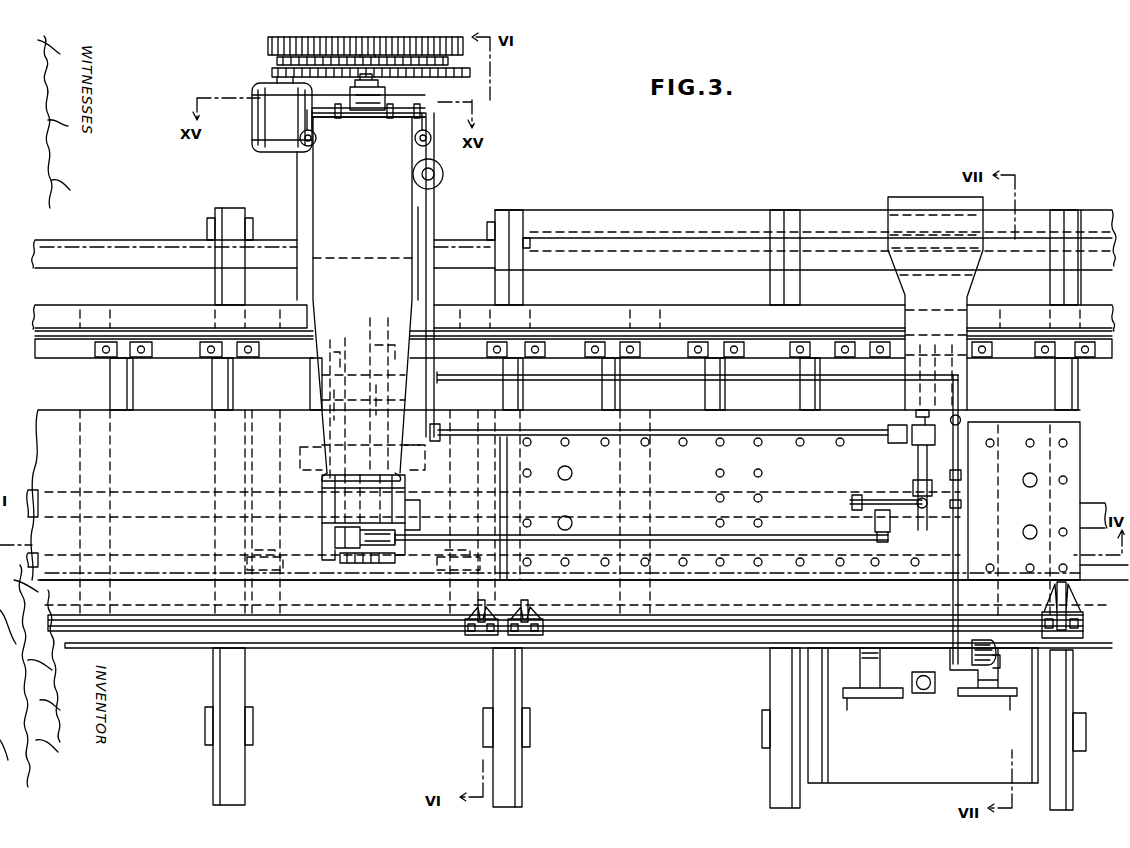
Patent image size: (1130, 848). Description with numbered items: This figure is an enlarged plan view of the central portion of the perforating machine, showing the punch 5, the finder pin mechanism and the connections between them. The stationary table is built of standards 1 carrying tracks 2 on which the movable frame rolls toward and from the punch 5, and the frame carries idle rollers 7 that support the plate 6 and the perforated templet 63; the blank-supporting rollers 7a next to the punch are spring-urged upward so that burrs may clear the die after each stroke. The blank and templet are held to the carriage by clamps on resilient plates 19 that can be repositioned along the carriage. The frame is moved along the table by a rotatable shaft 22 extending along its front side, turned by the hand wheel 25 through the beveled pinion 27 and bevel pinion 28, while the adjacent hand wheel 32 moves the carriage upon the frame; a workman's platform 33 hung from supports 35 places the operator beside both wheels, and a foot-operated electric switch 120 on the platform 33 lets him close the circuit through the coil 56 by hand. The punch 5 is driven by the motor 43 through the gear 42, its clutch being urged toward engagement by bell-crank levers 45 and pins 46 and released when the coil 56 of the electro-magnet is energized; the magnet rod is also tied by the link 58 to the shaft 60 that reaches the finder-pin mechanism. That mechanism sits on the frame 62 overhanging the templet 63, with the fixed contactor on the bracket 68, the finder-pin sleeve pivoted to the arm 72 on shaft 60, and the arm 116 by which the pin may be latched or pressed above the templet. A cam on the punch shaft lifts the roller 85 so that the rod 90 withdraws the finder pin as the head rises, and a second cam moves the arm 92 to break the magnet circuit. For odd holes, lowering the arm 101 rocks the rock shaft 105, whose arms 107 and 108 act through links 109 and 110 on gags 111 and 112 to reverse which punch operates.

The standards 1 is at (207, 229).
The tracks 2 is at (245, 687).
The punch 5 is at (325, 280).
The plate 6 is at (48, 424).
The idle rollers 7 is at (133, 386).
The blank-supporting rollers 7a is at (310, 387).
The resilient plate 19 is at (480, 638).
The rotatable shaft 22 is at (717, 652).
The hand wheel 25 is at (1002, 700).
The beveled pinion 27 is at (998, 665).
The bevel pinion 28 is at (983, 639).
The hand wheel 32 is at (890, 700).
The platform 33 is at (888, 764).
The supports 35 is at (818, 752).
The gear 42 is at (272, 72).
The motor 43 is at (276, 142).
The bell-crank levers 45 is at (425, 120).
The pins 46 is at (368, 112).
The coil 56 is at (443, 175).
The link 58 is at (436, 298).
The shaft 60 is at (671, 430).
The frame 62 is at (968, 299).
The templet 63 is at (1068, 460).
The bracket 68 is at (875, 520).
The arm 72 is at (918, 465).
The roller 85 is at (396, 545).
The rod 90 is at (670, 645).
The arm 92 is at (386, 562).
The arm 101 is at (953, 601).
The rock shaft 105 is at (592, 379).
The arm 107 is at (339, 368).
The arm 108 is at (387, 362).
The link 109 is at (301, 453).
The link 110 is at (403, 456).
The gag 111 is at (322, 485).
The gag 112 is at (404, 478).
The arm 116 is at (862, 500).
The foot-operated electric switch 120 is at (923, 695).